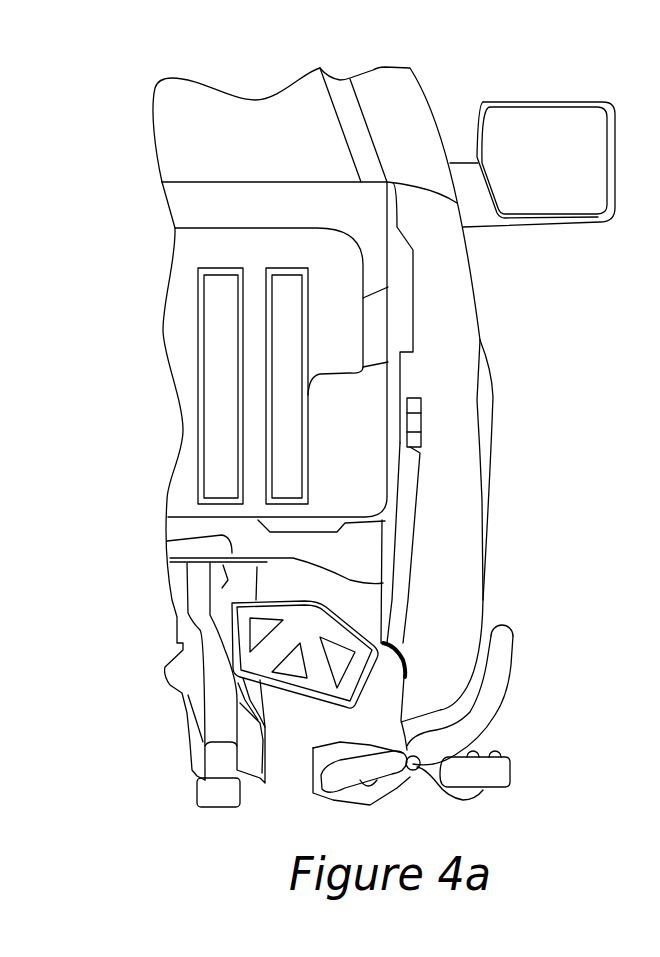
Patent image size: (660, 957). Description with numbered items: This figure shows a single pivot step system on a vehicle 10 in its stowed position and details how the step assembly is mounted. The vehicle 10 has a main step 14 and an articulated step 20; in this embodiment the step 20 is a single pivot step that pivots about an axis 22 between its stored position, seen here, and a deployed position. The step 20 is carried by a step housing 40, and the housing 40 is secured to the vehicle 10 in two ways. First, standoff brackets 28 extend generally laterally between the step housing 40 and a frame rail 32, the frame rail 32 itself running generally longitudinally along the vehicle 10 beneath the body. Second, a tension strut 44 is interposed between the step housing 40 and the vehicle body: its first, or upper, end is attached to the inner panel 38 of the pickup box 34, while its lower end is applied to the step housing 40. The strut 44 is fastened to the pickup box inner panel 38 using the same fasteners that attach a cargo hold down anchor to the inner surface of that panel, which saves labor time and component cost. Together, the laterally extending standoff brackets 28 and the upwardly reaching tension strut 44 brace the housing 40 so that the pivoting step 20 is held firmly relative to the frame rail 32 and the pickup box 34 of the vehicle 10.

The vehicle 10 is at (130, 457).
The main step 14 is at (505, 783).
The step 20 is at (512, 667).
The axis 22 is at (403, 770).
The standoff brackets 28 is at (330, 692).
The frame rail 32 is at (167, 541).
The pickup box 34 is at (412, 107).
The inner panel 38 is at (363, 300).
The step housing 40 is at (313, 756).
The tension strut 44 is at (402, 542).